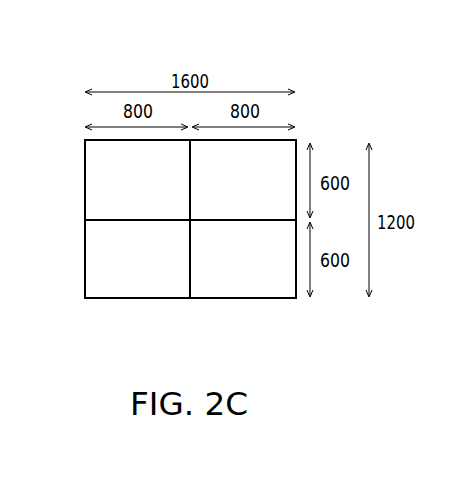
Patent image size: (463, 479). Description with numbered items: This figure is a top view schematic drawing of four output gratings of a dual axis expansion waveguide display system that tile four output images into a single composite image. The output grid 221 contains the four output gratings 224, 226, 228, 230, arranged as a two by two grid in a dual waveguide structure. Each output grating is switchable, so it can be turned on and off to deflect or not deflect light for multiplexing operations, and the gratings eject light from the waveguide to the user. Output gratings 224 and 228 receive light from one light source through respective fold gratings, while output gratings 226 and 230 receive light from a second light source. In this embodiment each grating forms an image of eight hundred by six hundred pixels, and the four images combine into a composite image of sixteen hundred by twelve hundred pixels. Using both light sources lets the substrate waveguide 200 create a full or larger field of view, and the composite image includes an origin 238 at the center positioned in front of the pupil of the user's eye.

The substrate waveguide 200 is at (247, 50).
The output grid 221 is at (84, 152).
The output grating 224 is at (85, 140).
The output grating 226 is at (296, 140).
The output grating 228 is at (98, 299).
The output grating 230 is at (285, 299).
The origin 238 is at (190, 220).